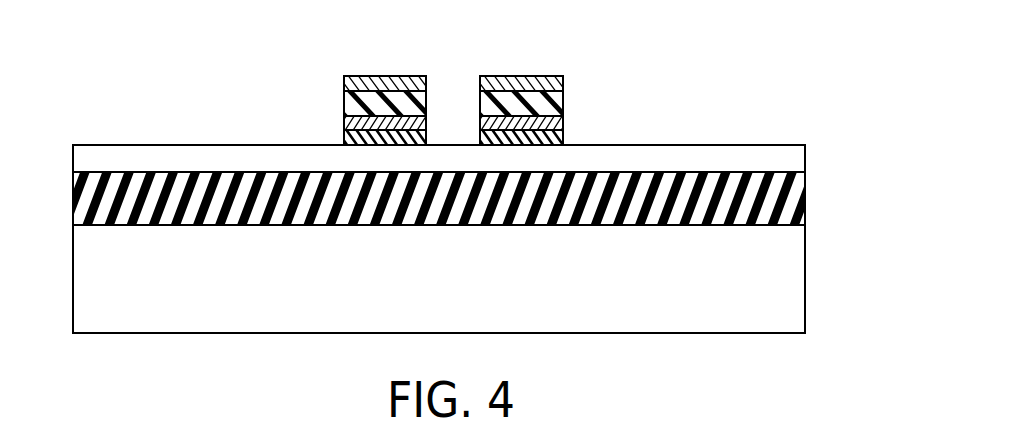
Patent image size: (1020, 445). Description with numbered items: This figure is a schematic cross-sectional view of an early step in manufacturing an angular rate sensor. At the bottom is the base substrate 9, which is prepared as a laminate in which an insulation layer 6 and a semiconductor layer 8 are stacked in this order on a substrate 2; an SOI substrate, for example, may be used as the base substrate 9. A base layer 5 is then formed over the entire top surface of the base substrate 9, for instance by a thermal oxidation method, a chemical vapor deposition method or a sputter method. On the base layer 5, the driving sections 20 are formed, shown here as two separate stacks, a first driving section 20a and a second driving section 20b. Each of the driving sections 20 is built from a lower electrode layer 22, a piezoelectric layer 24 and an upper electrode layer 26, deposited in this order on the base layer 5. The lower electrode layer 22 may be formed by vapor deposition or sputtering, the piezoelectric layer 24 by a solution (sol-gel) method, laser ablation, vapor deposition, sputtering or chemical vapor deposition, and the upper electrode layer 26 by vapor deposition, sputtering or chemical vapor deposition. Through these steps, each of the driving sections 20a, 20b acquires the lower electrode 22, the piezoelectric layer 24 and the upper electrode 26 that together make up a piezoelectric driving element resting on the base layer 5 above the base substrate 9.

The substrate 2 is at (805, 283).
The insulation layer 6 is at (805, 198).
The semiconductor layer 8 is at (805, 159).
The base substrate 9 is at (846, 143).
The base layer 5 is at (344, 140).
The lower electrode layer 22 is at (344, 125).
The piezoelectric layer 24 is at (344, 103).
The upper electrode layer 26 is at (344, 83).
The driving sections 20 is at (451, 96).
The driving section 20a is at (250, 47).
The driving section 20b is at (652, 47).